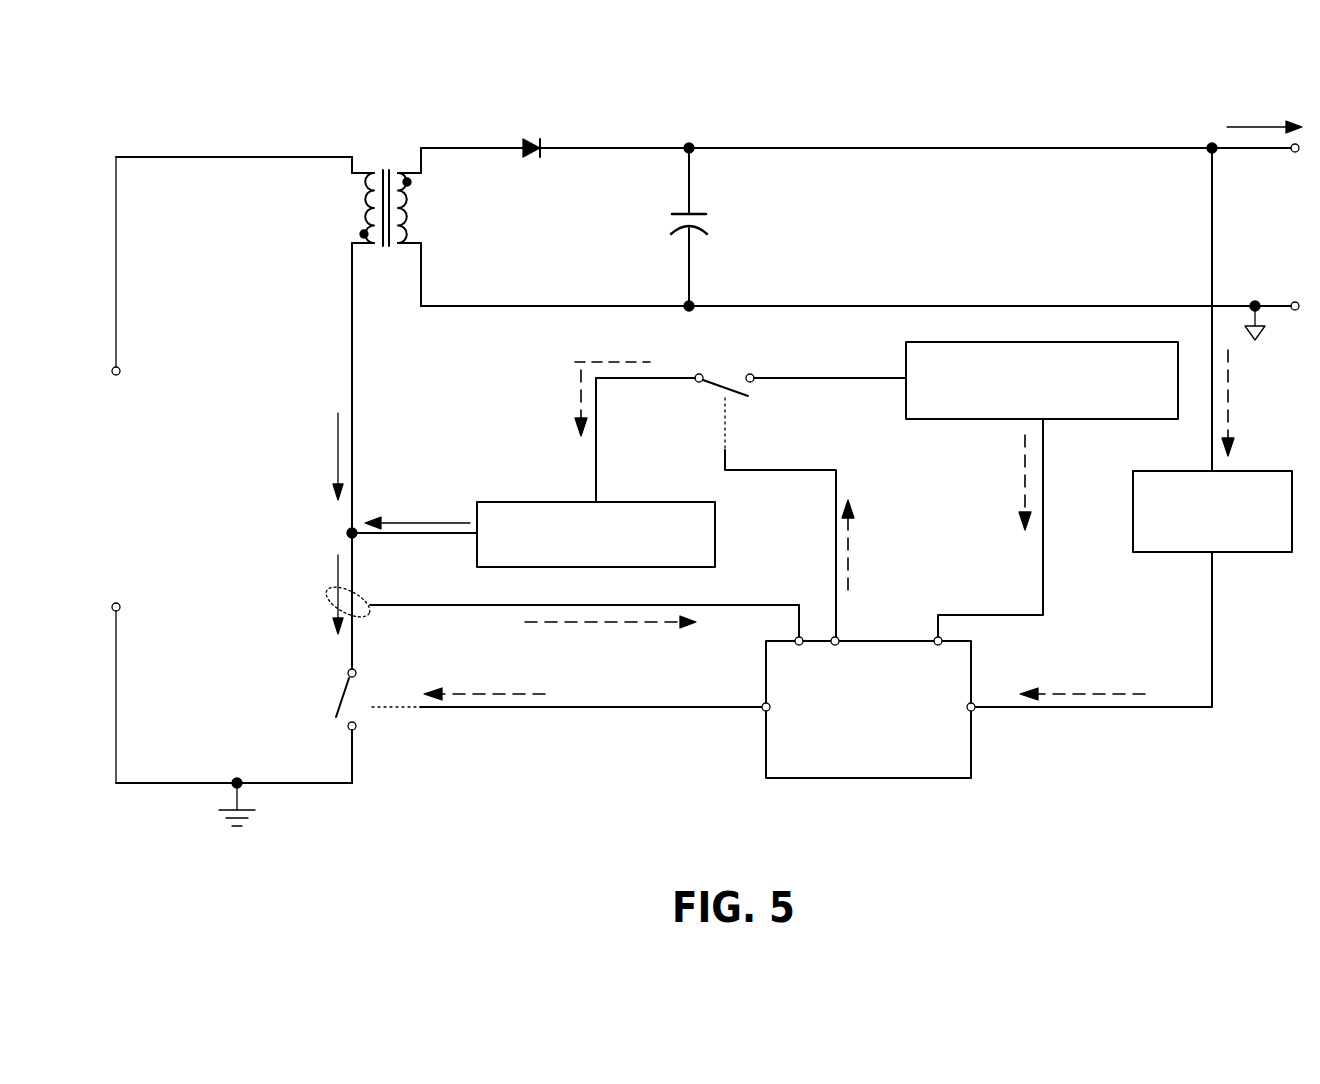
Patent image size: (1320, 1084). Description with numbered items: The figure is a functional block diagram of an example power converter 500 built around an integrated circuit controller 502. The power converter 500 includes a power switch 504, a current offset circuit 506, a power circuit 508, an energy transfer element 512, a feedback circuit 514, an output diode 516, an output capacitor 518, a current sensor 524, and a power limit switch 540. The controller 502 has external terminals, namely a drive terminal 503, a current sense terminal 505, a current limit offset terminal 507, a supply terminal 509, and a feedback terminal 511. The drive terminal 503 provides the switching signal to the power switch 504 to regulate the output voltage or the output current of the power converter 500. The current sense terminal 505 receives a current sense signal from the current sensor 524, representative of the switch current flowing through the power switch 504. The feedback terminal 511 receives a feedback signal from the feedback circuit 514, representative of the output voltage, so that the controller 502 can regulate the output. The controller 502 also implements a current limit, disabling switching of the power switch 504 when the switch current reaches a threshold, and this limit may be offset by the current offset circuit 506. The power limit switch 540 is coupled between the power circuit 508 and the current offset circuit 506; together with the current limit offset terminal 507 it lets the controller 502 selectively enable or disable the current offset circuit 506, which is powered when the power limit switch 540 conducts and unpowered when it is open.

The power converter 500 is at (1012, 102).
The controller 502 is at (873, 784).
The drive terminal 503 is at (761, 714).
The power switch 504 is at (363, 708).
The current sense terminal 505 is at (796, 638).
The current offset circuit 506 is at (536, 498).
The current limit offset terminal 507 is at (833, 628).
The power circuit 508 is at (896, 360).
The supply terminal 509 is at (935, 636).
The feedback terminal 511 is at (975, 718).
The energy transfer element 512 is at (385, 258).
The feedback circuit 514 is at (1245, 556).
The output diode 516 is at (550, 130).
The output capacitor 518 is at (706, 226).
The current sensor 524 is at (370, 592).
The power limit switch 540 is at (752, 400).